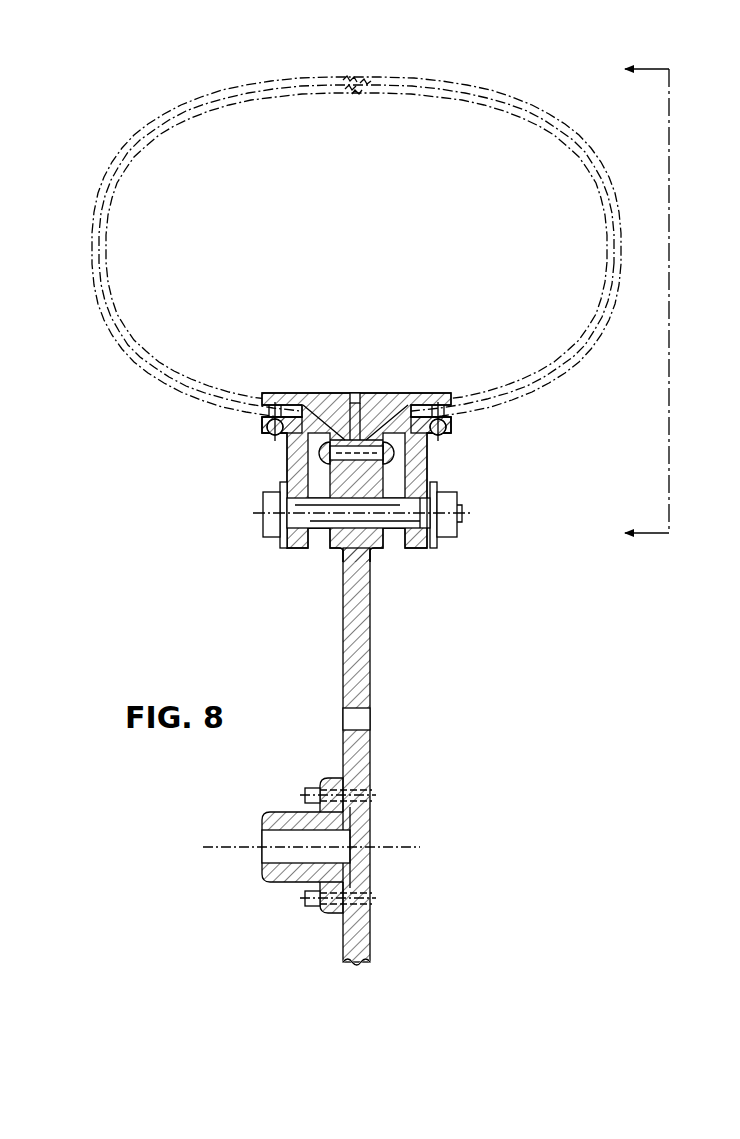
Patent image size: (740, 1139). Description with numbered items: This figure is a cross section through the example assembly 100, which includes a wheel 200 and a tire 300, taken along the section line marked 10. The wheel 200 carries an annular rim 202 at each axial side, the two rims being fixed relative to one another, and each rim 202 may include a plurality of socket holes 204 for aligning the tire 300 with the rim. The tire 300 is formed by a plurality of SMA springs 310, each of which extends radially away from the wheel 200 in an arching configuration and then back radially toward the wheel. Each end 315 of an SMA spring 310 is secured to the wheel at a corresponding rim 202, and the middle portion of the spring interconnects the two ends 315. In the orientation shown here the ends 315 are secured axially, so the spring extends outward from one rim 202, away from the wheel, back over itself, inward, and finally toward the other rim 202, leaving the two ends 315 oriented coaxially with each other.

The assembly 100 is at (84, 90).
The tire 300 is at (441, 77).
The SMA spring 310 is at (357, 79).
The section line 10- 10 is at (629, 303).
The annular rim 202 is at (313, 397).
The socket hole 204 is at (290, 405).
The end of SMA spring 315 is at (296, 426).
The wheel 200 is at (371, 627).